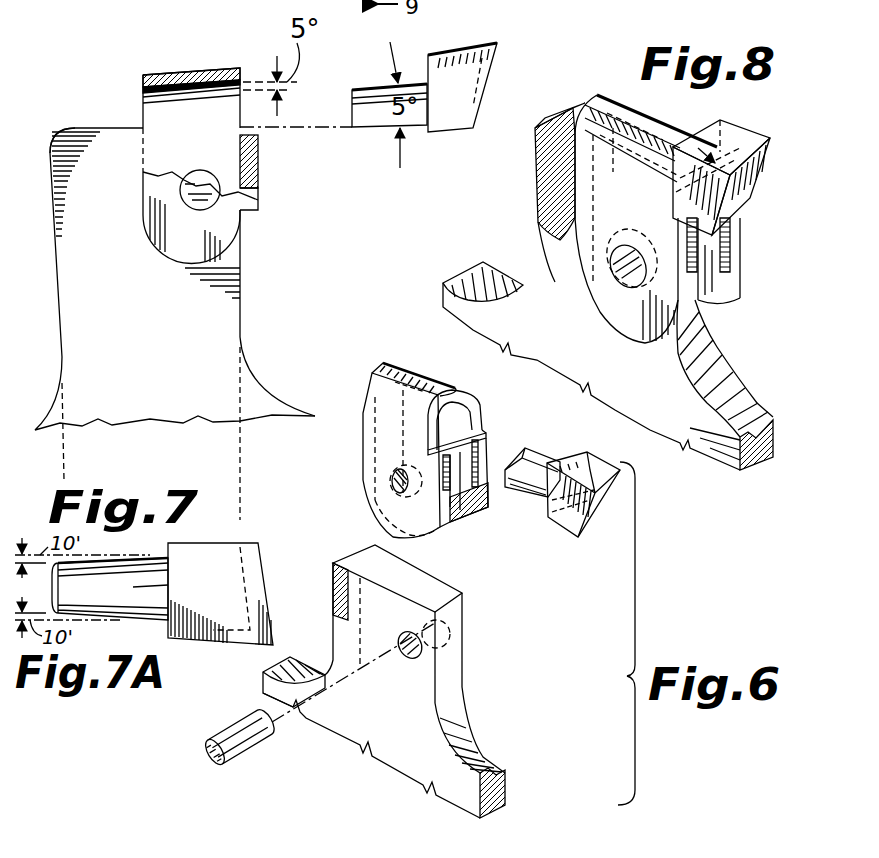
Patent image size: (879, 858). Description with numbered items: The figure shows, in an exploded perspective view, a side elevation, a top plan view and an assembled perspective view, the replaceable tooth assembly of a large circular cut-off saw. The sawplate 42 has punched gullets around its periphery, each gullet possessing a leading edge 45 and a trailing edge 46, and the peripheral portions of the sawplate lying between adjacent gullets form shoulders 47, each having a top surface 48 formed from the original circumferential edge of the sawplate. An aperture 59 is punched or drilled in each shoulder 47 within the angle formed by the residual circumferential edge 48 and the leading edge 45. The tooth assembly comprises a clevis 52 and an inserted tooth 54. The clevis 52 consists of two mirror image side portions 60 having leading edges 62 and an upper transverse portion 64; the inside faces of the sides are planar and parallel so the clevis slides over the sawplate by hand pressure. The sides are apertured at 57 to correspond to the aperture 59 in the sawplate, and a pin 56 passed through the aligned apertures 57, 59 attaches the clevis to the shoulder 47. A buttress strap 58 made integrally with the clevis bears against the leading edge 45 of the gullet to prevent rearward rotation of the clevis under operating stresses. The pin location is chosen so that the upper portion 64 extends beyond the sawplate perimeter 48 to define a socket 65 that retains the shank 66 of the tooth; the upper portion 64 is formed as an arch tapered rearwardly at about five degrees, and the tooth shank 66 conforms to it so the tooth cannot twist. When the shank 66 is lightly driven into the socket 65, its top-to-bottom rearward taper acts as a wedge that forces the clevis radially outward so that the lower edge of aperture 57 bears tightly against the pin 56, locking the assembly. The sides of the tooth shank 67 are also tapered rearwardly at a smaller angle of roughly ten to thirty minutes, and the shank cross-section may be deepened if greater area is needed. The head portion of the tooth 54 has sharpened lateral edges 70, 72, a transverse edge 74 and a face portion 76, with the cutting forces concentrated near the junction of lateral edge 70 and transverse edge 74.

In FIG. 6, the sawplate 42 is at (430, 765).
In FIG. 8, the sawplate 42 is at (695, 417).
In FIG. 7, the leading edge 45 is at (243, 285).
In FIG. 6, the leading edge 45 is at (450, 682).
In FIG. 8, the leading edge 45 is at (707, 293).
In FIG. 7, the trailing edge 46 is at (60, 357).
In FIG. 7, the shoulder 47 is at (168, 318).
In FIG. 6, the shoulder 47 is at (398, 629).
In FIG. 8, the shoulder 47 is at (547, 222).
In FIG. 7, the top surface 48 is at (85, 128).
In FIG. 6, the top surface 48 is at (440, 593).
In FIG. 8, the top surface 48 is at (572, 122).
In FIG. 6, the clevis 52 is at (350, 476).
In FIG. 8, the clevis 52 is at (565, 179).
In FIG. 7, the inserted tooth 54 is at (481, 30).
In FIG. 7A, the inserted tooth 54 is at (258, 586).
In FIG. 6, the inserted tooth 54 is at (602, 460).
In FIG. 8, the inserted tooth 54 is at (753, 130).
In FIG. 7, the pin 56 is at (200, 190).
In FIG. 6, the pin 56 is at (217, 738).
In FIG. 8, the pin 56 is at (607, 302).
In FIG. 6, the aperture 57 is at (400, 488).
In FIG. 7, the buttress strap 58 is at (260, 168).
In FIG. 6, the buttress strap 58 is at (488, 433).
In FIG. 8, the buttress strap 58 is at (725, 247).
In FIG. 6, the aperture 59 is at (443, 636).
In FIG. 7, the side portion 60 is at (155, 222).
In FIG. 6, the side portion 60 is at (380, 447).
In FIG. 8, the side portion 60 is at (636, 216).
In FIG. 6, the leading edge 62 is at (488, 487).
In FIG. 8, the leading edge 62 is at (738, 268).
In FIG. 7, the upper transverse portion 64 is at (153, 75).
In FIG. 6, the upper transverse portion 64 is at (380, 365).
In FIG. 8, the upper transverse portion 64 is at (613, 93).
In FIG. 7, the socket 65 is at (212, 117).
In FIG. 7, the shank 66 is at (360, 90).
In FIG. 7A, the shank 66 is at (138, 578).
In FIG. 6, the shank 66 is at (556, 460).
In FIG. 8, the shank 66 is at (673, 112).
In FIG. 7A, the tooth shank 67 is at (83, 563).
In FIG. 6, the lateral edge 70 is at (568, 525).
In FIG. 6, the lateral edge 72 is at (612, 503).
In FIG. 6, the transverse edge 74 is at (618, 468).
In FIG. 6, the face portion 76 is at (596, 517).